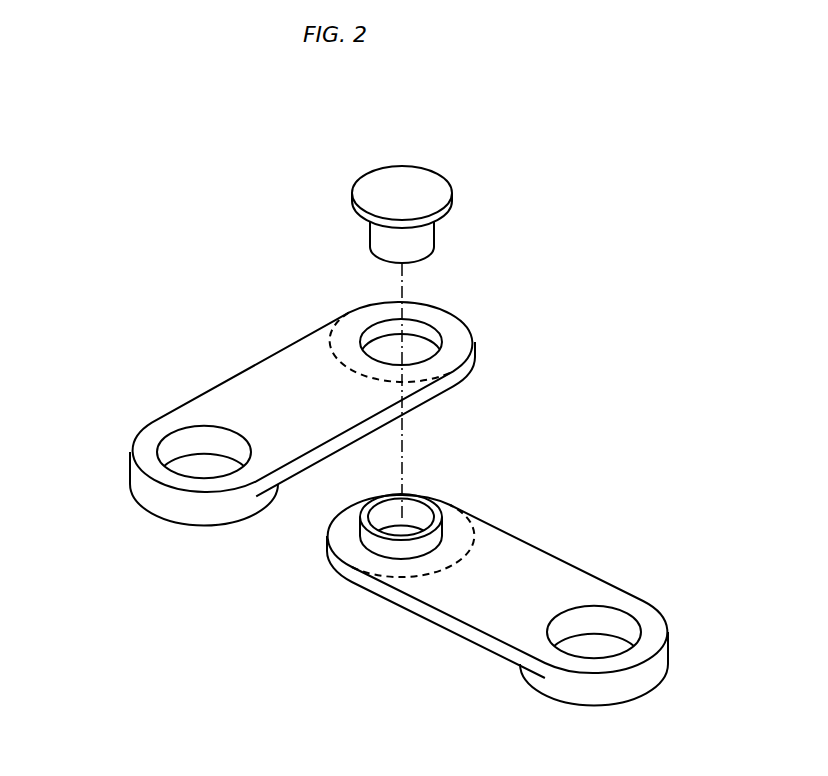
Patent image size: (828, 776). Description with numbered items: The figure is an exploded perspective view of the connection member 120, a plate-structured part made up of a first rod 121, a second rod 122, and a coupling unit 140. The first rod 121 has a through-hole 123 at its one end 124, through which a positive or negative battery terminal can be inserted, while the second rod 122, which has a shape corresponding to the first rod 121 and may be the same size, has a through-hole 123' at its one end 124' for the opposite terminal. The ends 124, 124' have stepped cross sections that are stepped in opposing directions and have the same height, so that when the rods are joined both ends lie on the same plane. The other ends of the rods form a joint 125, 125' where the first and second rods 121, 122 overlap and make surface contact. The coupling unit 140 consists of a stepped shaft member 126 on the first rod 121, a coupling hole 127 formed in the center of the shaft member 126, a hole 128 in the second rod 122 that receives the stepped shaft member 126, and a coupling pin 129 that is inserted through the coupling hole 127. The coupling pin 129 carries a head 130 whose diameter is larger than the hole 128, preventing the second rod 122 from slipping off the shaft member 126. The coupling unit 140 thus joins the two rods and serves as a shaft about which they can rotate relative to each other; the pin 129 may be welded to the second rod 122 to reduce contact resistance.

The connection member 120 is at (176, 213).
The first rod 121 is at (475, 600).
The second rod 122 is at (272, 377).
The through-hole 123 is at (616, 594).
The through-hole 123' is at (204, 501).
The end of first rod 124 is at (618, 682).
The end of second rod 124' is at (166, 470).
The joint 125 is at (355, 535).
The joint 125' is at (429, 324).
The stepped shaft member 126 is at (388, 547).
The coupling hole 127 is at (418, 520).
The hole 128 is at (415, 353).
The coupling pin 129 is at (385, 237).
The head 130 is at (420, 185).
The coupling unit 140 is at (395, 161).